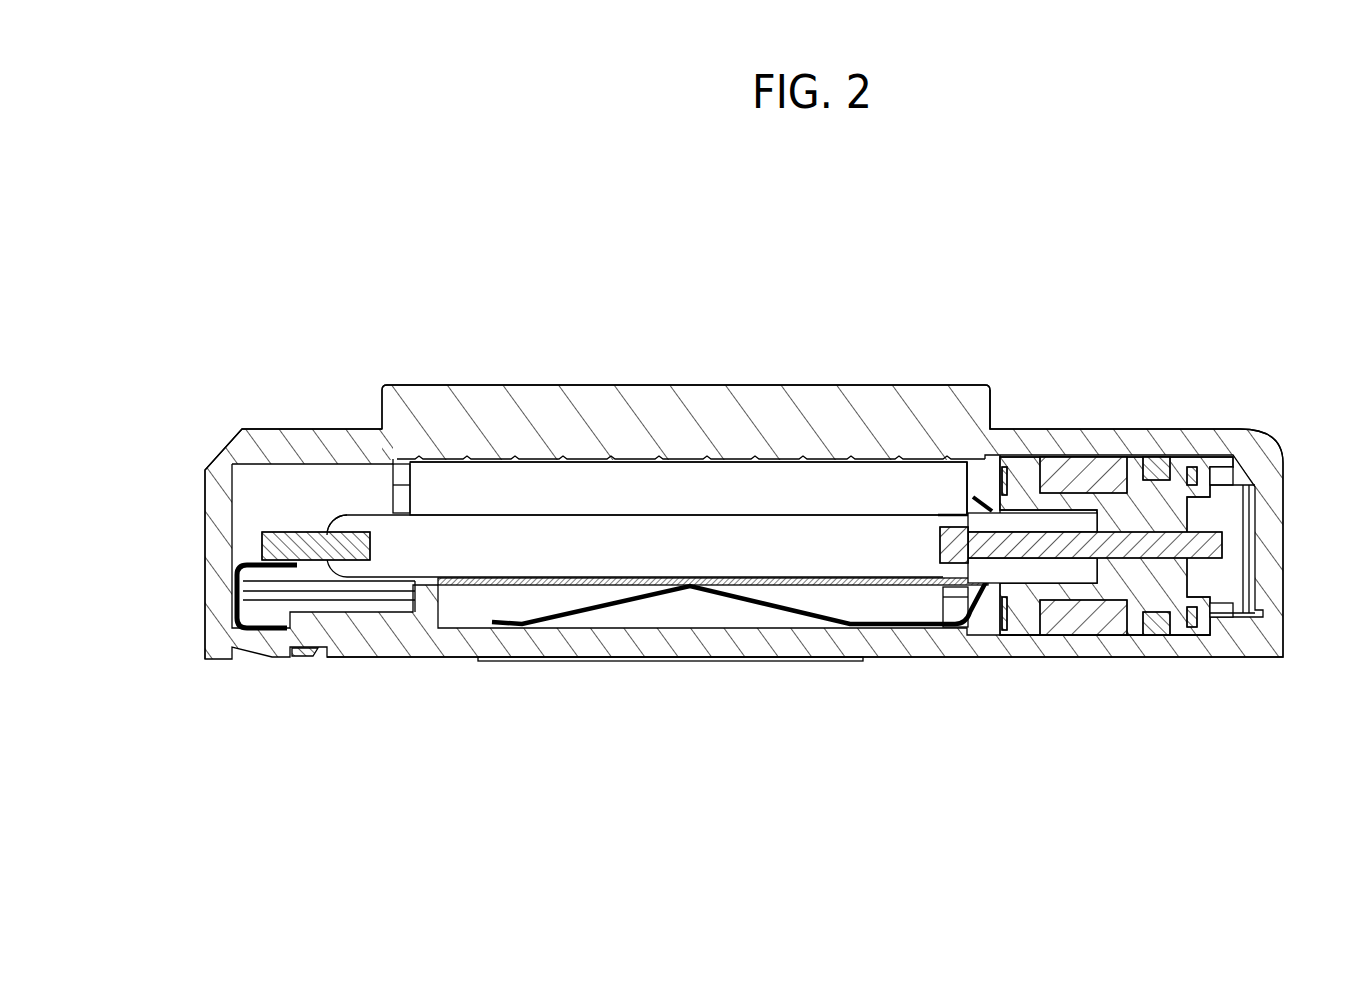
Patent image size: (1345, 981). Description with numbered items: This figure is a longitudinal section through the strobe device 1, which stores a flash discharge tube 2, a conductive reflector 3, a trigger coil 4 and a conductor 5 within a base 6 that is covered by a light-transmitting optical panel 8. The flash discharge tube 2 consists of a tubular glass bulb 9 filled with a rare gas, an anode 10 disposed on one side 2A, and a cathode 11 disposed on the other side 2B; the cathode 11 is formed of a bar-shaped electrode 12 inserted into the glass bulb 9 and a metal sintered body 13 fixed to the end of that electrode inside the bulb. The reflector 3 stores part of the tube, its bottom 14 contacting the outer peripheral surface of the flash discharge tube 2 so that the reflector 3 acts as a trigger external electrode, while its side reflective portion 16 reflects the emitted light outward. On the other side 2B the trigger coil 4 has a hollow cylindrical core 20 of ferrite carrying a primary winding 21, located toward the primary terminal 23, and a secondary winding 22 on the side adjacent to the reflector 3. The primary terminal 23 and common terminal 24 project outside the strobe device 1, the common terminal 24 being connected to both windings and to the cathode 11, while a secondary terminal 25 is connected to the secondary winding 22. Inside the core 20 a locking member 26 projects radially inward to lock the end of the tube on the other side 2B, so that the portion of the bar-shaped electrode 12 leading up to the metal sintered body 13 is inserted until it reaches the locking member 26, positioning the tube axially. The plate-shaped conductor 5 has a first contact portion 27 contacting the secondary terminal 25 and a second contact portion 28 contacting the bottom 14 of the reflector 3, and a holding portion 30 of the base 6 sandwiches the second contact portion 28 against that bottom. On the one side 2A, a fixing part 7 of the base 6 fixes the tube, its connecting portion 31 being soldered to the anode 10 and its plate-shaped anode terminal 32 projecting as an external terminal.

The strobe device 1 is at (1324, 297).
The flash discharge tube 2 is at (718, 510).
The one side 2A is at (350, 512).
The other side 2B is at (1052, 572).
The reflector 3 is at (699, 425).
The trigger coil 4 is at (1150, 465).
The conductor 5 is at (746, 445).
The base 6 is at (882, 662).
The fixing part 7 is at (236, 568).
The optical panel 8 is at (500, 395).
The glass bulb 9 is at (475, 510).
The anode 10 is at (278, 535).
The cathode 11 is at (1081, 647).
The bar-shaped electrode 12 is at (1018, 560).
The metal sintered body 13 is at (961, 565).
The bottom 14 is at (575, 578).
The side reflective portion 16 is at (615, 485).
The core 20 is at (1048, 462).
The primary winding 21 is at (1160, 463).
The secondary winding 22 is at (1097, 468).
The primary terminal 23 is at (1192, 470).
The common terminal 24 is at (1253, 496).
The secondary terminal 25 is at (1004, 468).
The locking member 26 is at (1128, 612).
The first contact portion 27 is at (985, 505).
The second contact portion 28 is at (725, 590).
The holding portion 30 is at (645, 635).
The connecting portion 31 is at (230, 483).
The anode terminal 32 is at (307, 653).